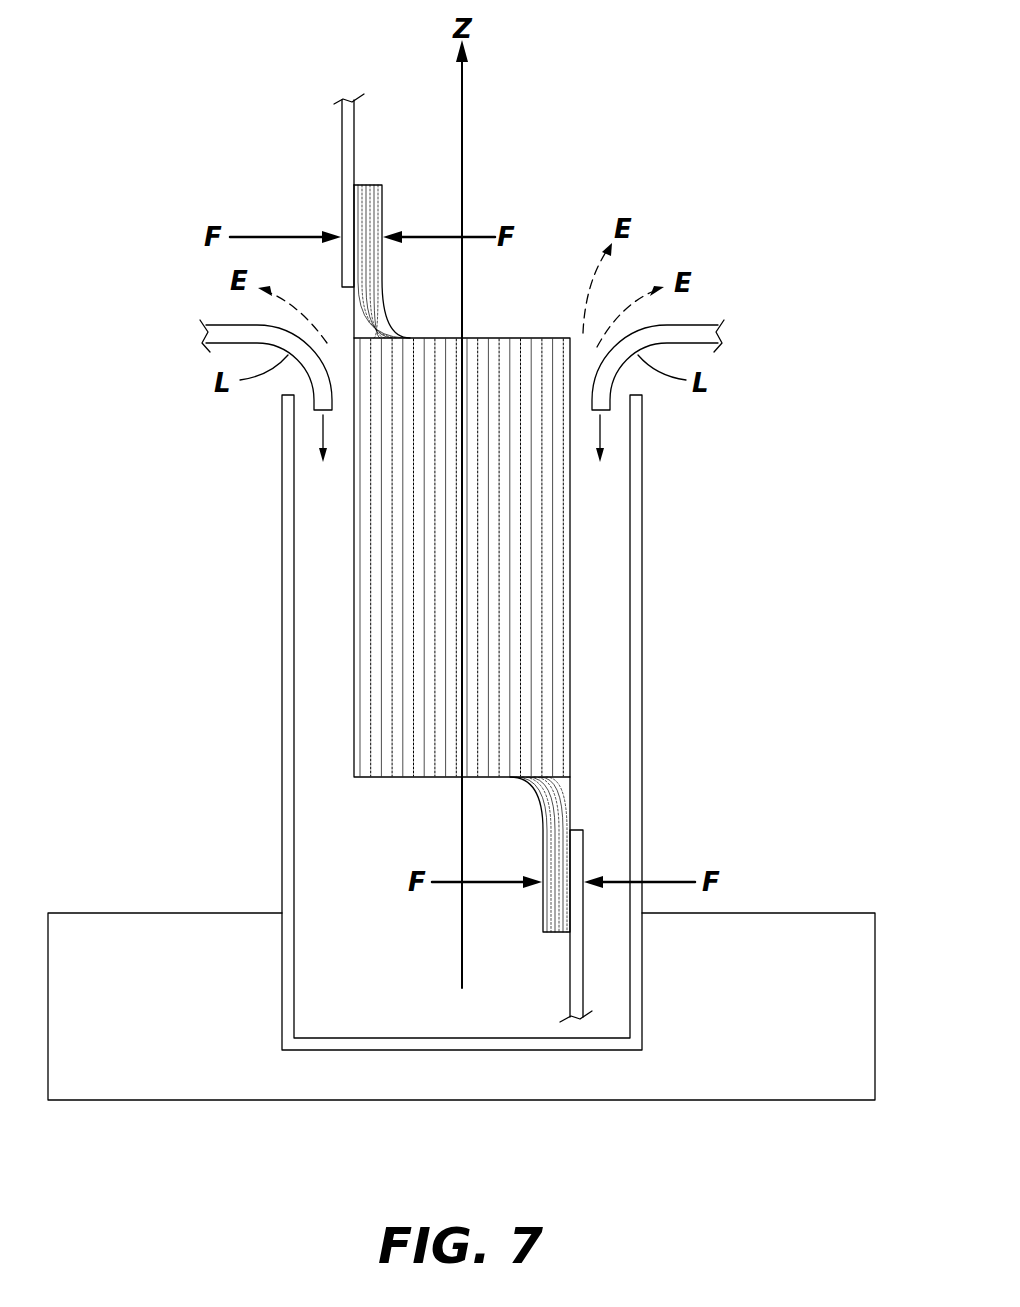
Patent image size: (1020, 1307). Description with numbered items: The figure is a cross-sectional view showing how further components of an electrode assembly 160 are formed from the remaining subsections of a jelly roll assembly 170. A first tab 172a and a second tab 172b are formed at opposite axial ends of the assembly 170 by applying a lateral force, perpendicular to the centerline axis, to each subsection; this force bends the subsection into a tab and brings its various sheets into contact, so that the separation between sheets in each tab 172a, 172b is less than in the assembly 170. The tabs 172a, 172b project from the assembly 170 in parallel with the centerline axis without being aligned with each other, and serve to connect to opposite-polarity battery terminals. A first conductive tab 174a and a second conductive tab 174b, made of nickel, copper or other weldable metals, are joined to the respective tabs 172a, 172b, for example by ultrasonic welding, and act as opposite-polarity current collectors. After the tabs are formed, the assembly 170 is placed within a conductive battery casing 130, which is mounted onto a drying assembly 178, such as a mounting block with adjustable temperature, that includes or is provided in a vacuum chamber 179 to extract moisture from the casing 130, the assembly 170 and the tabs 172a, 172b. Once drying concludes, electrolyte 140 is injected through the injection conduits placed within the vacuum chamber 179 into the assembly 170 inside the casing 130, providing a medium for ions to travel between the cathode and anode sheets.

The conductive battery casing 130 is at (636, 692).
The electrolyte 140 is at (322, 432).
The electrode assembly 160 is at (606, 495).
The assembly 170 is at (380, 598).
The first tab 172a is at (392, 190).
The second tab 172b is at (532, 921).
The first conductive tab 174a is at (342, 155).
The second conductive tab 174b is at (580, 975).
The drying assembly 178 is at (164, 1017).
The vacuum chamber 179 is at (164, 801).